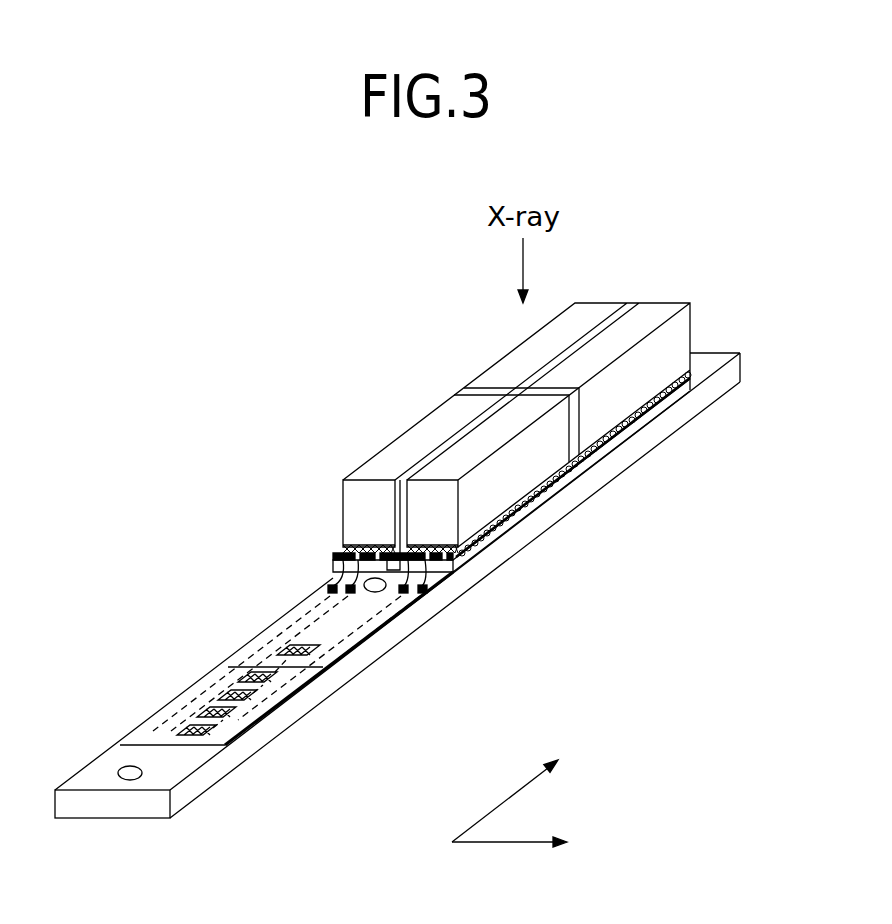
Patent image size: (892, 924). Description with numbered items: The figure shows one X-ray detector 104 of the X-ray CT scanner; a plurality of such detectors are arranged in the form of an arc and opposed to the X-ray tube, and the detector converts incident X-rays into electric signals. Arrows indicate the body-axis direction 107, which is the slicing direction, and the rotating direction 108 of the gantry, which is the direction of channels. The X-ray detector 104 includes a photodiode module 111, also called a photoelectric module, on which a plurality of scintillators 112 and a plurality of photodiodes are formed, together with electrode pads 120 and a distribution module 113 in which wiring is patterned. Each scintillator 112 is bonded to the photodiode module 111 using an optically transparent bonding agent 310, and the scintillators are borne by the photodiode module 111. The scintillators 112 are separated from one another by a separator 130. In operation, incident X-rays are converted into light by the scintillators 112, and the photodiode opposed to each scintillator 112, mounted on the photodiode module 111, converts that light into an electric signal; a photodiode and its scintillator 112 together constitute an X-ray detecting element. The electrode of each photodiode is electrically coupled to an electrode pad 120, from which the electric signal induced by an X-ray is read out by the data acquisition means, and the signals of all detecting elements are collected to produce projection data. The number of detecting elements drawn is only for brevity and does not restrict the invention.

The X-ray detector 104 is at (572, 552).
The body-axis direction 107 is at (530, 787).
The rotating direction 108 is at (528, 838).
The photodiode module 111 is at (477, 549).
The scintillators 112 is at (393, 453).
The distribution module 113 is at (367, 655).
The electrode pads 120 is at (233, 693).
The separator 130 is at (467, 393).
The optically transparent bonding agent 310 is at (667, 390).